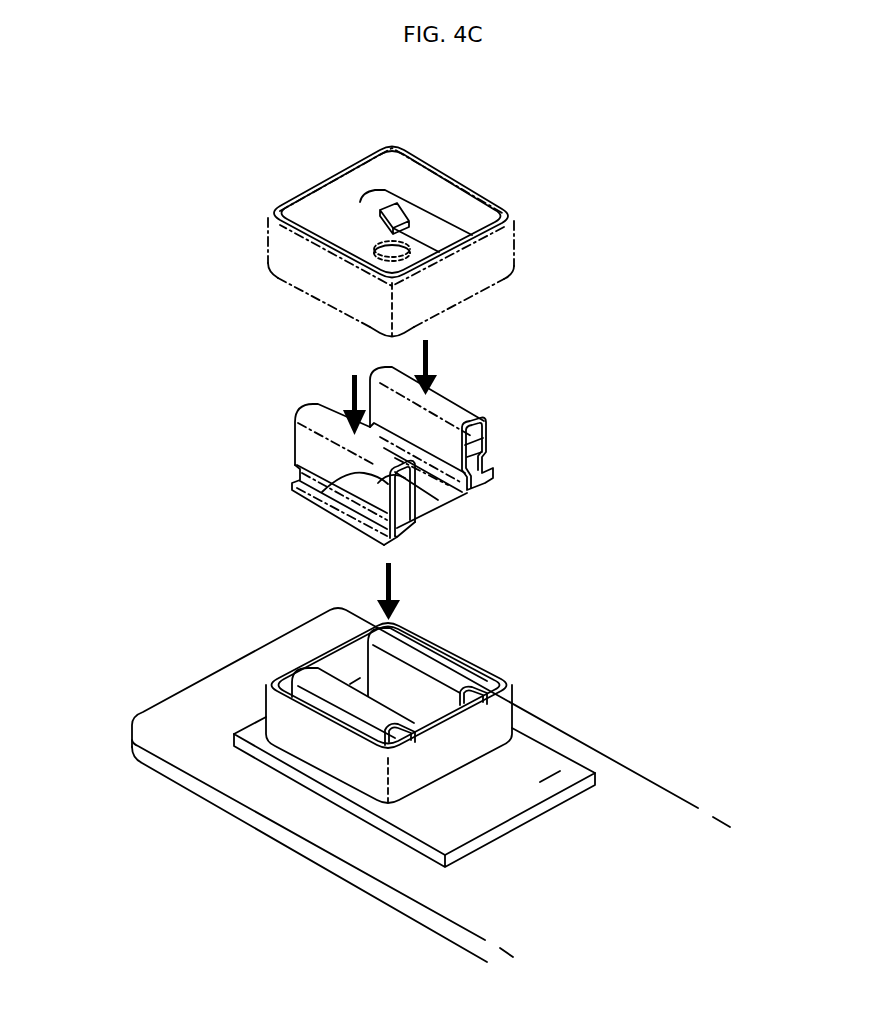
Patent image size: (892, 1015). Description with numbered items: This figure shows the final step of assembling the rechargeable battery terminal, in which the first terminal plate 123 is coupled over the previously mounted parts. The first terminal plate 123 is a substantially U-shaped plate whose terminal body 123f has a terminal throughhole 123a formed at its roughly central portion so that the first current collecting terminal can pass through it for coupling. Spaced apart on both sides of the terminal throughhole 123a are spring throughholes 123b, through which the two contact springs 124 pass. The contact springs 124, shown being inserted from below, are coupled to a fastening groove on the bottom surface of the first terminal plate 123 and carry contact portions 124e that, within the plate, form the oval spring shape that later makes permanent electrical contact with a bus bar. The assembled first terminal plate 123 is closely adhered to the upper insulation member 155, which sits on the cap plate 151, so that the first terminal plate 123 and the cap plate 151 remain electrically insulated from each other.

The first terminal plate 123 is at (496, 653).
The terminal throughhole 123a is at (393, 254).
The spring throughhole 123b is at (440, 229).
The terminal body 123f is at (493, 720).
The contact springs 124 is at (292, 403).
The contact portion 124e is at (335, 484).
The cap plate 151 is at (228, 685).
The upper insulation member 155 is at (550, 780).